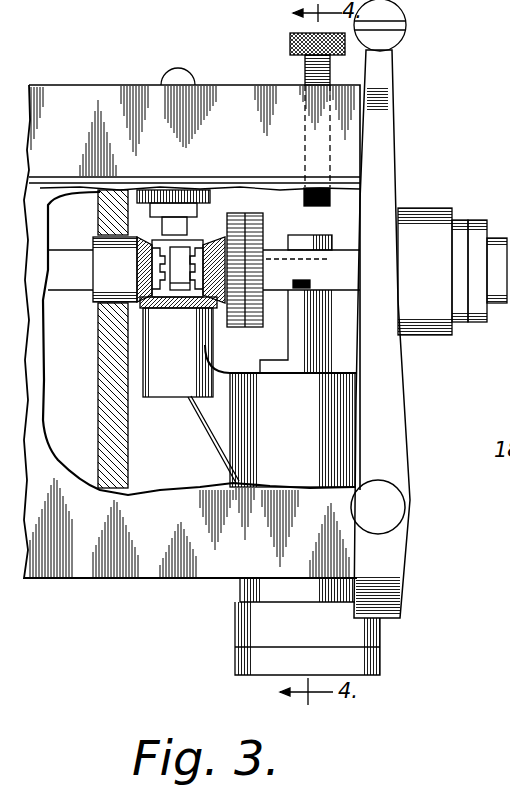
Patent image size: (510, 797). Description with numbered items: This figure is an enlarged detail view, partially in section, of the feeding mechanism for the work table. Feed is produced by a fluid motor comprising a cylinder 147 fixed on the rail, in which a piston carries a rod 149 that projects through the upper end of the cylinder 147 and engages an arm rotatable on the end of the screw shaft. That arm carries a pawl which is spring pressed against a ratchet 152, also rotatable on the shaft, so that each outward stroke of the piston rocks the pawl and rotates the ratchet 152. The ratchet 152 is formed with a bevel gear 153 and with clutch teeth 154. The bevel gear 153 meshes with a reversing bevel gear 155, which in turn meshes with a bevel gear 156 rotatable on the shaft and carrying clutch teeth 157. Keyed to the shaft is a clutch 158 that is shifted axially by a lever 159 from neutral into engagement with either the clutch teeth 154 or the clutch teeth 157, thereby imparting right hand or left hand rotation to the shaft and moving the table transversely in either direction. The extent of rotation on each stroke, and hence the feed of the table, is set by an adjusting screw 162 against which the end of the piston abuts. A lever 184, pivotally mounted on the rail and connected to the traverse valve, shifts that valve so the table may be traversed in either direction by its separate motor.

The cylinder 147 is at (240, 592).
The rod 149 is at (300, 335).
The ratchet 152 is at (232, 325).
The bevel gear 153 is at (216, 255).
The clutch teeth 154 is at (203, 238).
The reversing bevel gear 155 is at (145, 308).
The bevel gear 156 is at (147, 252).
The clutch teeth 157 is at (100, 213).
The clutch 158 is at (173, 257).
The lever 159 is at (178, 68).
The adjusting screw 162 is at (290, 46).
The lever 184 is at (390, 428).